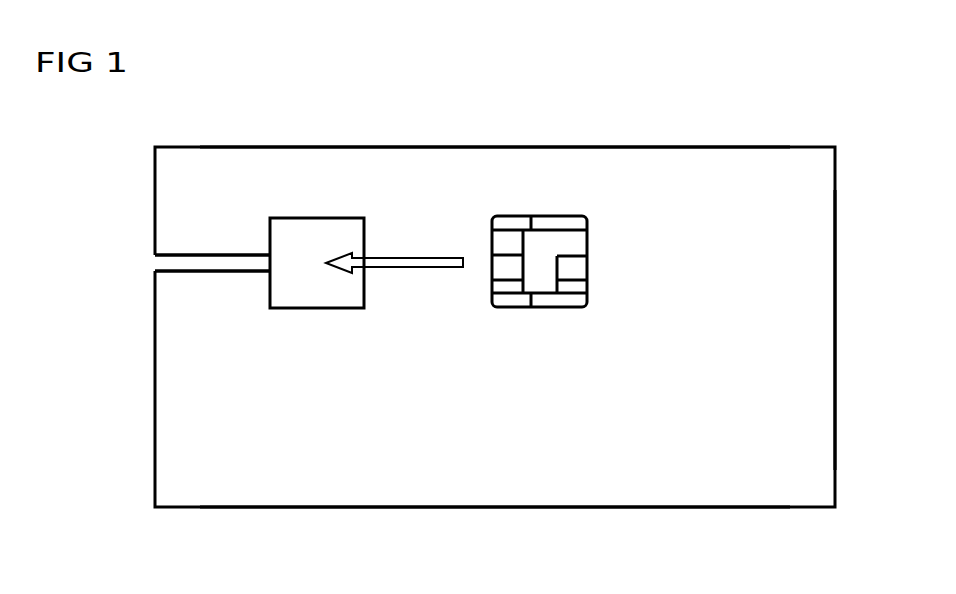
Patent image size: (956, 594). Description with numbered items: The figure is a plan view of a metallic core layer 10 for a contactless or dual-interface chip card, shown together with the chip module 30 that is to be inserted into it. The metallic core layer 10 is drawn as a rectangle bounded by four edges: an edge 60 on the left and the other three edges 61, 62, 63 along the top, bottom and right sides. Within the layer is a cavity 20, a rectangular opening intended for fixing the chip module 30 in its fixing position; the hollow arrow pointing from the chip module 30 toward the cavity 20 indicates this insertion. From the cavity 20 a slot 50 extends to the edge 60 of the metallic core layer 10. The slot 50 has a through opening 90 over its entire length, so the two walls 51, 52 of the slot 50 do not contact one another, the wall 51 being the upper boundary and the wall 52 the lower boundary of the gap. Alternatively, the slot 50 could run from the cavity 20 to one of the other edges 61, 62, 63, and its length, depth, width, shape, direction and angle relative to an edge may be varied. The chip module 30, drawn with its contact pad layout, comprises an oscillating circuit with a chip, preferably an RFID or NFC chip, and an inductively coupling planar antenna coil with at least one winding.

The metallic core layer 10 is at (805, 113).
The cavity 20 is at (320, 310).
The chip module 30 is at (588, 259).
The slot 50 is at (187, 262).
The wall of the slot 51 is at (220, 250).
The wall of the slot 52 is at (220, 276).
The edge of the metallic core layer 60 is at (155, 417).
The edge of the metallic core layer 61 is at (493, 147).
The edge of the metallic core layer 62 is at (495, 508).
The edge of the metallic core layer 63 is at (835, 323).
The through opening 90 is at (135, 266).